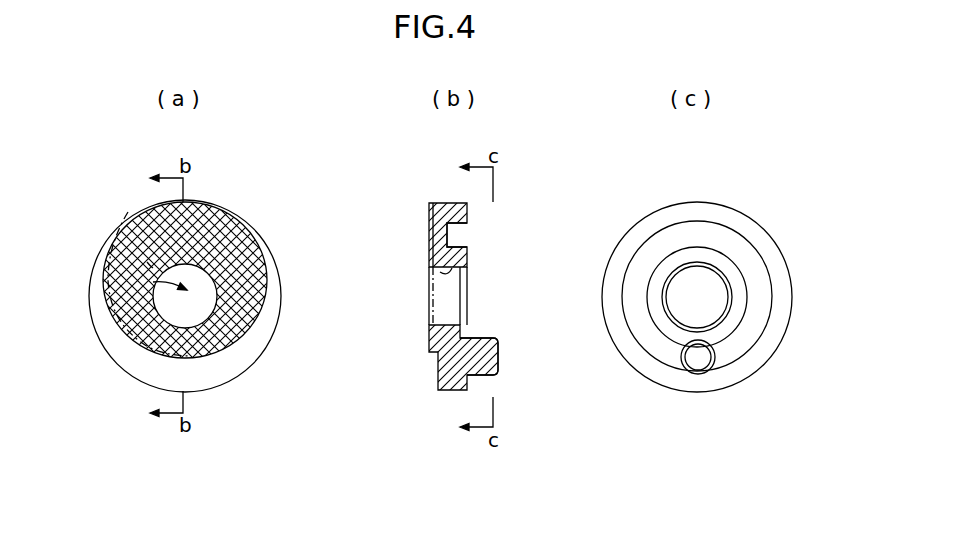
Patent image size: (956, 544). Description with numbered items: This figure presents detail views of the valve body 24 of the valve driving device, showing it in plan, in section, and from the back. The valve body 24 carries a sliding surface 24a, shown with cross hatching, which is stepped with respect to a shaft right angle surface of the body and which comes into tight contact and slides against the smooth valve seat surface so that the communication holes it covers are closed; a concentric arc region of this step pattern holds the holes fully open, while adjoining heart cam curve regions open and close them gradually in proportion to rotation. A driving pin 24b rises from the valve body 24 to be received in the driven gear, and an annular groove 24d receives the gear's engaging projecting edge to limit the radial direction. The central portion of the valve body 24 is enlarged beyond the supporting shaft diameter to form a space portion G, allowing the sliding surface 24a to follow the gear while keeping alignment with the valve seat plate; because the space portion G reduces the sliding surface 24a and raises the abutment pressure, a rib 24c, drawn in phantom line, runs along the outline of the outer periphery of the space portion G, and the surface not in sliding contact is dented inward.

The valve body 24 is at (88, 320).
The sliding surface 24a is at (237, 278).
The driving pin 24b is at (716, 354).
The rib 24c is at (133, 210).
The annular groove 24d is at (470, 234).
The space portion G is at (147, 262).